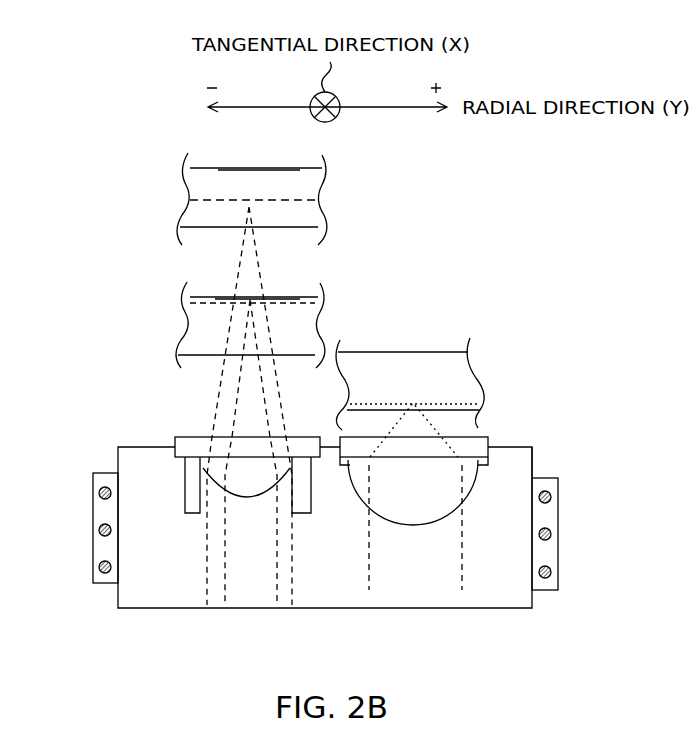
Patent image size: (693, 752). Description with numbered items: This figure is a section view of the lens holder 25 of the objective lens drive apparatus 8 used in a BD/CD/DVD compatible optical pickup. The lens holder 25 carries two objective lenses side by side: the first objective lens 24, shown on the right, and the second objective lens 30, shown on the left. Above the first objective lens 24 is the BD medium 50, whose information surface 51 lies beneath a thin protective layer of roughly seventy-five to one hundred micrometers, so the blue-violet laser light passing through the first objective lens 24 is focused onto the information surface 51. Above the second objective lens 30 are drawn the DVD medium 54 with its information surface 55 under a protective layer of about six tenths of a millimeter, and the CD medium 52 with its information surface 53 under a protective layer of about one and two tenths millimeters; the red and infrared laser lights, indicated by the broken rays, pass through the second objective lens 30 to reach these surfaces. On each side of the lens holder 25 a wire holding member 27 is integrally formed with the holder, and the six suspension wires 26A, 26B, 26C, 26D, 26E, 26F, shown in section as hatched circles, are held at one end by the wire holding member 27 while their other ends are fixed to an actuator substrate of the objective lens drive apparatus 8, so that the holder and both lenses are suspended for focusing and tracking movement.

The objective lens drive apparatus 8 is at (533, 447).
The first objective lens 24 is at (422, 497).
The lens holder 25 is at (512, 600).
The suspension wire 26A is at (558, 497).
The suspension wire 26B is at (558, 534).
The suspension wire 26C is at (558, 572).
The suspension wire 26D is at (93, 499).
The suspension wire 26E is at (93, 536).
The suspension wire 26F is at (93, 573).
The wire holding member 27 is at (558, 478).
The second objective lens 30 is at (245, 497).
The BD medium 50 is at (432, 352).
The information surface 51 is at (485, 400).
The CD medium 52 is at (212, 297).
The information surface 53 is at (318, 300).
The DVD medium 54 is at (220, 200).
The information surface 55 is at (318, 200).